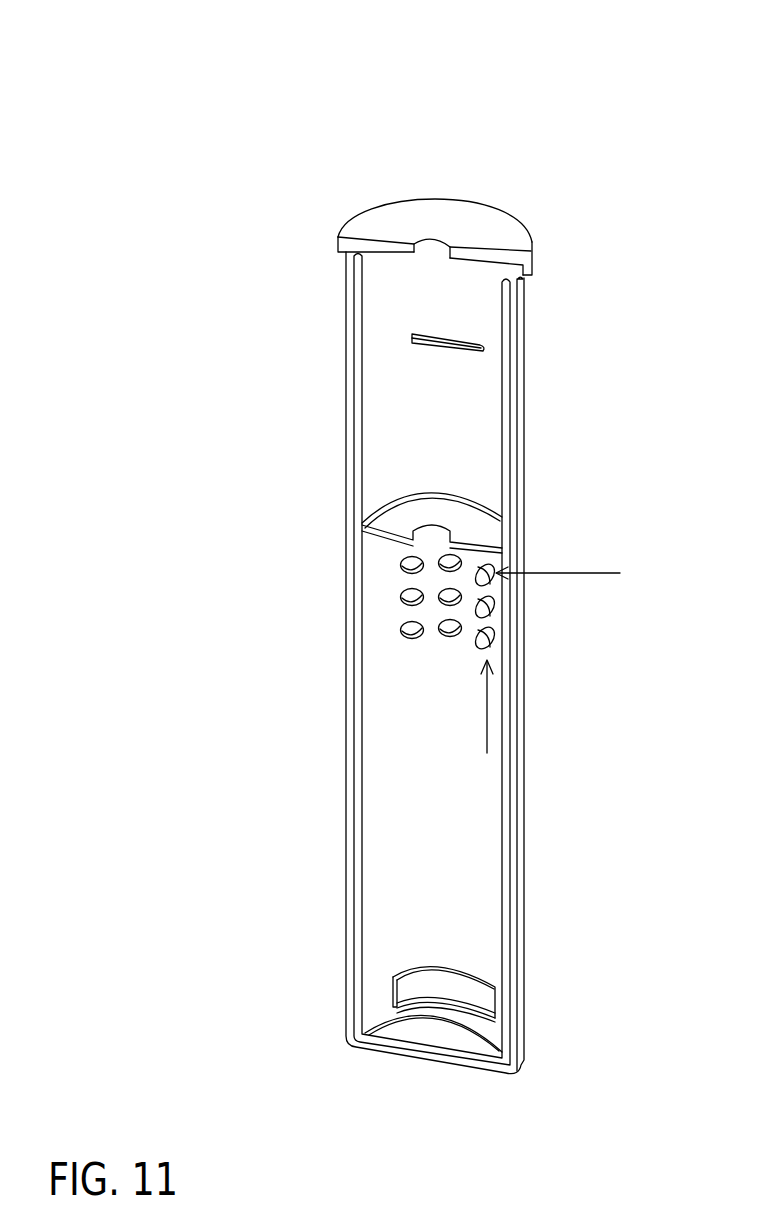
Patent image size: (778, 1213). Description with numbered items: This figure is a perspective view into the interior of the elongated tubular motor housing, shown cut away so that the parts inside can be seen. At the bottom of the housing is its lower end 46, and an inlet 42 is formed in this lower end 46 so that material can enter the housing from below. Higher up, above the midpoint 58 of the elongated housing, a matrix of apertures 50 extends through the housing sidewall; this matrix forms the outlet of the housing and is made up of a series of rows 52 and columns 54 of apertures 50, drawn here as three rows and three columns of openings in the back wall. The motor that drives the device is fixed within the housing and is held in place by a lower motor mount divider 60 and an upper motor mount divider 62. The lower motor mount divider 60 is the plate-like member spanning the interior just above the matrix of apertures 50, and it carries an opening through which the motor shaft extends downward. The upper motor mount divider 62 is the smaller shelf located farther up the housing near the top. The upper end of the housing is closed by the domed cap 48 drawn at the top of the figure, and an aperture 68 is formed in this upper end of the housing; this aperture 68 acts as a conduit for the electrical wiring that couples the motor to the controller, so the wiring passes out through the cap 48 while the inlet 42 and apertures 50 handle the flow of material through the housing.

The inlet 42 is at (465, 993).
The lower end 46 is at (437, 1035).
The cap 48 is at (518, 235).
The apertures 50 is at (400, 633).
The rows 52 is at (579, 574).
The columns 54 is at (475, 730).
The midpoint 58 is at (517, 655).
The lower motor mount divider 60 is at (402, 518).
The upper motor mount divider 62 is at (412, 340).
The aperture 68 is at (430, 247).